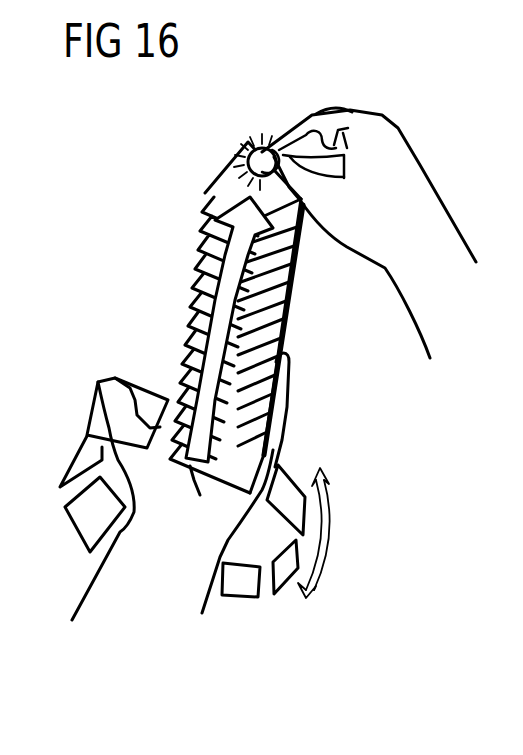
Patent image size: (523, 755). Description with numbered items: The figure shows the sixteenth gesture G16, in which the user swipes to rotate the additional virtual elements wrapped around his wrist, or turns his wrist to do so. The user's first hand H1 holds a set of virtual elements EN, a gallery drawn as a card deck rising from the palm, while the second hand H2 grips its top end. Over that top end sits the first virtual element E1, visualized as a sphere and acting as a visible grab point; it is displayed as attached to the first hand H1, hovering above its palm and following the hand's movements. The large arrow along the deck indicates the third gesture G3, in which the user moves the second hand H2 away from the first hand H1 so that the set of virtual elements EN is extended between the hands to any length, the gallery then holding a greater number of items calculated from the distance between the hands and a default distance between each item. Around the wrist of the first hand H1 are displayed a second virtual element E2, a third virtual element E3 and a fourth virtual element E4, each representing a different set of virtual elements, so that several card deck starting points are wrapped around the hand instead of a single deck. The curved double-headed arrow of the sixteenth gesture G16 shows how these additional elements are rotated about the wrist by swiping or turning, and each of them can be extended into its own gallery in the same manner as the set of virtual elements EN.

The first virtual element E1 is at (254, 147).
The second hand H2 is at (370, 113).
The third gesture G3 is at (230, 292).
The set of virtual elements EN is at (287, 322).
The first hand H1 is at (290, 400).
The second virtual element E2 is at (296, 470).
The sixteenth gesture G16 is at (328, 535).
The third virtual element E3 is at (287, 590).
The fourth virtual element E4 is at (242, 600).